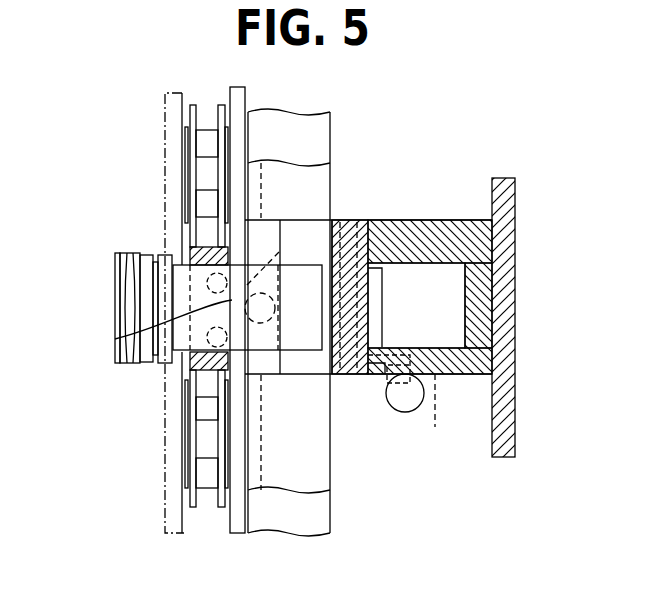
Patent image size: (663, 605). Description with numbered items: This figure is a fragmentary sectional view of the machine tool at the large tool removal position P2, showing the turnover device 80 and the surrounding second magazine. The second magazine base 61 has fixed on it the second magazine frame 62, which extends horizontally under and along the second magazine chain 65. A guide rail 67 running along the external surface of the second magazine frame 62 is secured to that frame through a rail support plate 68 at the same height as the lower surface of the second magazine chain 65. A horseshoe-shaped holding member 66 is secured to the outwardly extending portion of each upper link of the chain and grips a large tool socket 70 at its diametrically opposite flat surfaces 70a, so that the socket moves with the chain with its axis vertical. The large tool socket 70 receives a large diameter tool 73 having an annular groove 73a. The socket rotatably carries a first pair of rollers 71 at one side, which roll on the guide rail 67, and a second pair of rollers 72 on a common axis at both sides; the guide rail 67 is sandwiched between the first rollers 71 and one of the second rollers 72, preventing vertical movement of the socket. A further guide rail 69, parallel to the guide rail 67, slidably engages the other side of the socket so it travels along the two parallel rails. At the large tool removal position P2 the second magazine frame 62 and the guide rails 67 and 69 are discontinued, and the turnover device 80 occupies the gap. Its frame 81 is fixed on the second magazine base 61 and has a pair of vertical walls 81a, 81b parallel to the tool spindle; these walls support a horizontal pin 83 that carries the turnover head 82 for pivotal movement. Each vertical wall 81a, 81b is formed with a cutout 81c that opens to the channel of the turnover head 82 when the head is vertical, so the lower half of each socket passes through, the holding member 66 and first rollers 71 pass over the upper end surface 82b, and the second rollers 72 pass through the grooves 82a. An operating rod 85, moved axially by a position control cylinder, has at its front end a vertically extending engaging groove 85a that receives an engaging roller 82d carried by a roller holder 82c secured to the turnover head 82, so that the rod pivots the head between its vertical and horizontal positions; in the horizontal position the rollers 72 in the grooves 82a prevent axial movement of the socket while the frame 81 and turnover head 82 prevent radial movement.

The second magazine base 61 is at (510, 413).
The second magazine frame 62 is at (313, 523).
The second magazine chain 65 is at (210, 480).
The holding member 66 is at (187, 365).
The guide rail 67 is at (235, 532).
The rail support plate 68 is at (252, 483).
The guide rail 69 is at (172, 498).
The large tool socket 70 is at (172, 357).
The flat surfaces 70a is at (183, 247).
The first pair of rollers 71 is at (227, 338).
The second pair of rollers 72 is at (273, 318).
The large diameter tool 73 is at (152, 256).
The annular groove 73a is at (132, 256).
The turnover device 80 is at (380, 148).
The frame 81 is at (443, 223).
The vertical wall 81a is at (395, 223).
The vertical wall 81b is at (453, 363).
The cutout 81c is at (303, 223).
The turnover head 82 is at (360, 293).
The grooves 82a is at (285, 247).
The upper end surface 82b is at (115, 339).
The roller holder 82c is at (375, 322).
The engaging roller 82d is at (383, 374).
The pin 83 is at (365, 218).
The operating rod 85 is at (402, 402).
The engaging groove 85a is at (447, 419).
The large tool removal position P2 is at (106, 314).